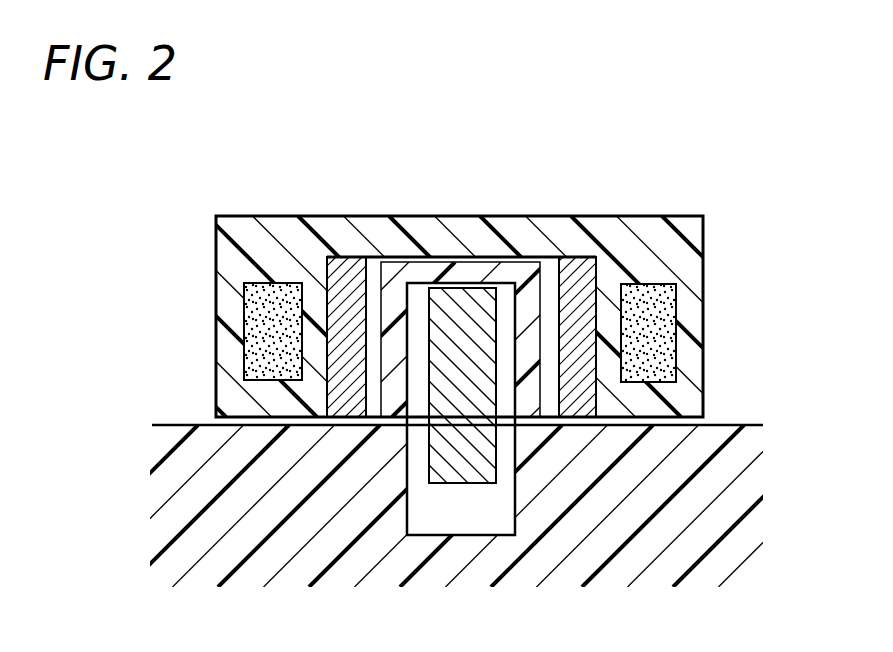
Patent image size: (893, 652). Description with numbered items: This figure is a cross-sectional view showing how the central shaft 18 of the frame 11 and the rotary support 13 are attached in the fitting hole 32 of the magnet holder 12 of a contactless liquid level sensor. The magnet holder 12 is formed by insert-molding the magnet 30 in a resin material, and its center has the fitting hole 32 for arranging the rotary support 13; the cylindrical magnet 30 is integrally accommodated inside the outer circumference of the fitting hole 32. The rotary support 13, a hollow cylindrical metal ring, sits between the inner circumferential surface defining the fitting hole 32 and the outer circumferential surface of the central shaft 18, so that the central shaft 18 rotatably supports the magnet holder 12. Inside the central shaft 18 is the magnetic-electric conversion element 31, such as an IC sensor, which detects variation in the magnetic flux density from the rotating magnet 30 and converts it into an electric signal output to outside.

The frame 11 is at (655, 552).
The magnet holder 12 is at (666, 208).
The rotary support 13 is at (345, 263).
The central shaft 18 is at (397, 280).
The magnet 30 is at (650, 323).
The magnetic-electric conversion element 31 is at (468, 302).
The fitting hole 32 is at (588, 288).